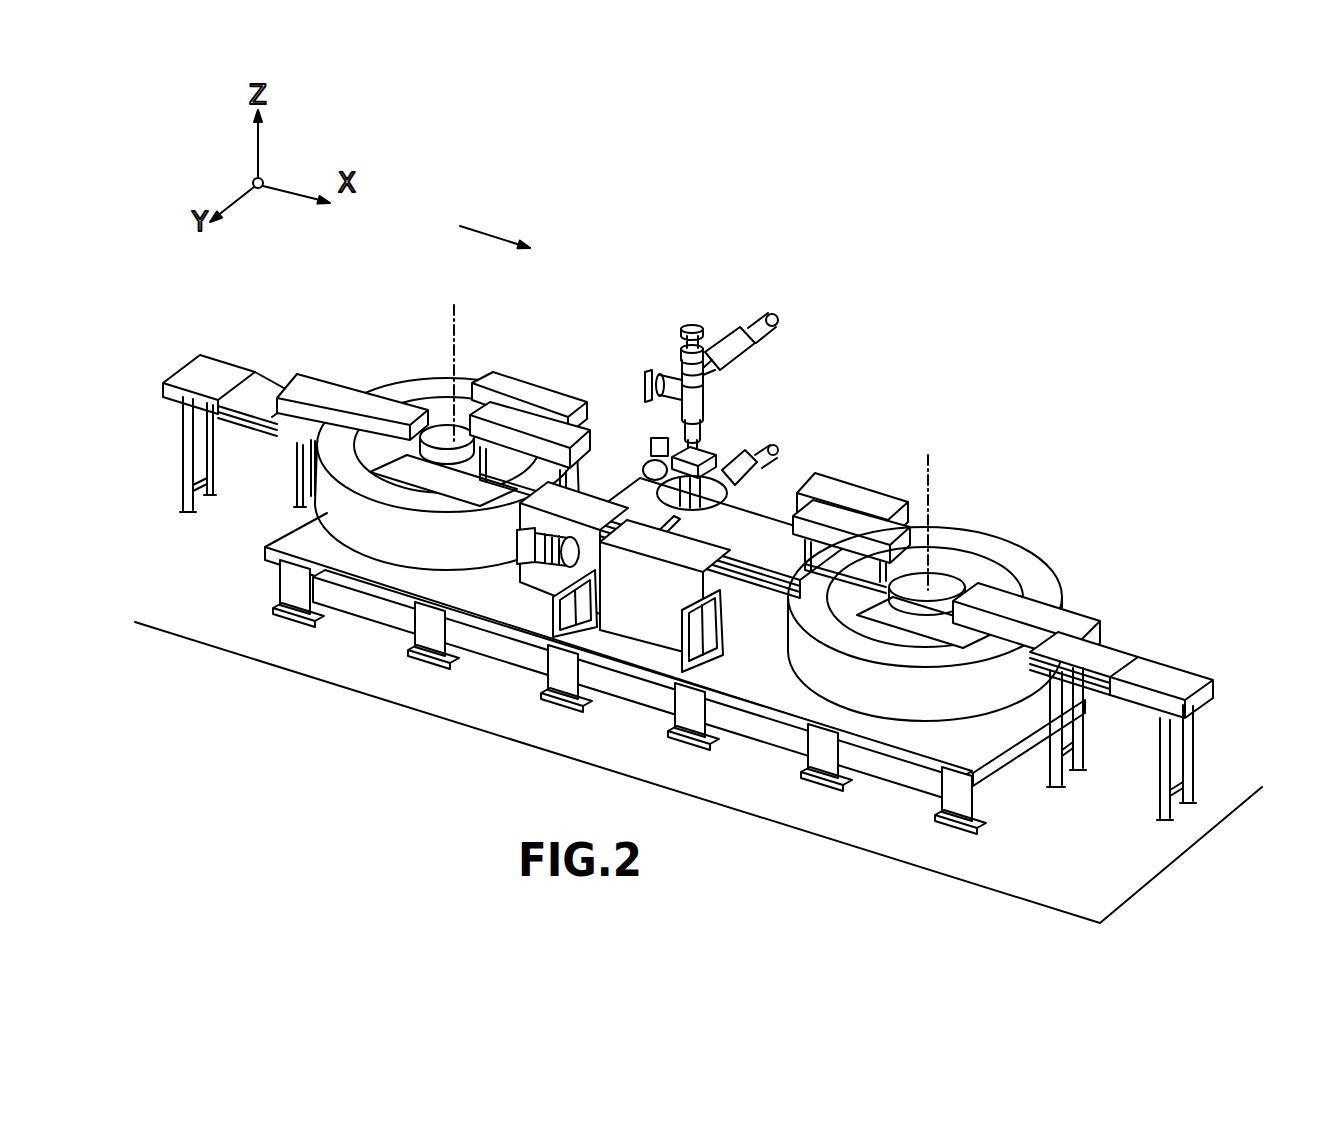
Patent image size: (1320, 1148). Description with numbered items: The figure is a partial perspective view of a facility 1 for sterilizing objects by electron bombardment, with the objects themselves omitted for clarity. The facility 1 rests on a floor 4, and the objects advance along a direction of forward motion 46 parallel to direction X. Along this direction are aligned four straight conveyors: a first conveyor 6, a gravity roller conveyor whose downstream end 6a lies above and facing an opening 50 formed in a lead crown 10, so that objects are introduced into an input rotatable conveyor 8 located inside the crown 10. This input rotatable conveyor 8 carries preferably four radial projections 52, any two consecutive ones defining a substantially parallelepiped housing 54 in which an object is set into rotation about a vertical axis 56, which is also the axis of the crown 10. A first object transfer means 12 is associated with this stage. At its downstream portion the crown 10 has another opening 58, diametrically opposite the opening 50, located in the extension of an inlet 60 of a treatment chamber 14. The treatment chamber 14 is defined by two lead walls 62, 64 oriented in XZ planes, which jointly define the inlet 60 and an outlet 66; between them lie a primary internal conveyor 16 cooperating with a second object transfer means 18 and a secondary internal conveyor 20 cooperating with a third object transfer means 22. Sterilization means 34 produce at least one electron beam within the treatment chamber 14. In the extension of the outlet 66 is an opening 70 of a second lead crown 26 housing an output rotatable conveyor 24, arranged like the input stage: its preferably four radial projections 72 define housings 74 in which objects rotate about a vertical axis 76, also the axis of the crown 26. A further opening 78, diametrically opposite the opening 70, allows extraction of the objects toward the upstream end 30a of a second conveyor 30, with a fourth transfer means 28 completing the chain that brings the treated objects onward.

The facility 1 is at (955, 392).
The floor 4 is at (310, 678).
The first conveyor 6 is at (231, 424).
The downstream end 6a is at (287, 417).
The input rotatable conveyor 8 is at (447, 425).
The crown 10 is at (390, 547).
The first object transfer means 12 is at (308, 384).
The treatment chamber 14 is at (765, 522).
The primary internal conveyor 16 is at (617, 500).
The second object transfer means 18 is at (480, 378).
The secondary internal conveyor 20 is at (735, 540).
The third object transfer means 22 is at (865, 500).
The output rotatable conveyor 24 is at (912, 631).
The crown 26 is at (960, 725).
The fourth transfer means 28 is at (1073, 620).
The second conveyor 30 is at (1137, 707).
The upstream end 30a is at (1070, 670).
The sterilization means 34 is at (730, 326).
The direction of forward motion of the objects 46 is at (495, 227).
The opening 50 is at (353, 437).
The radial projections 52 is at (467, 493).
The housing 54 is at (393, 475).
The axis 56 is at (460, 312).
The opening 58 is at (540, 480).
The inlet 60 is at (583, 497).
The wall 62 is at (545, 525).
The wall 64 is at (648, 438).
The outlet 66 is at (733, 550).
The opening 70 is at (830, 585).
The radial projections 72 is at (937, 550).
The housing 74 is at (890, 633).
The axis 76 is at (930, 472).
The opening 78 is at (933, 693).